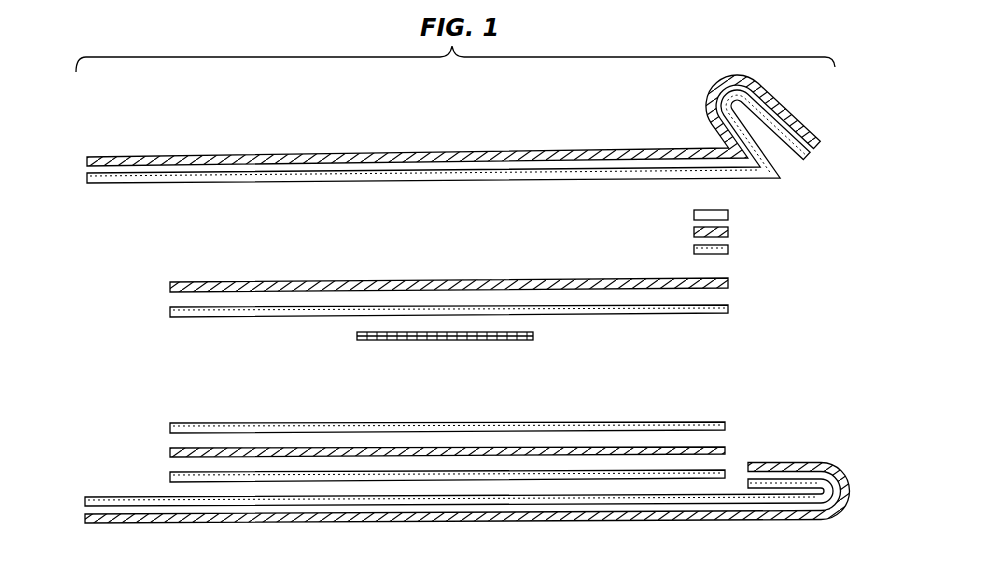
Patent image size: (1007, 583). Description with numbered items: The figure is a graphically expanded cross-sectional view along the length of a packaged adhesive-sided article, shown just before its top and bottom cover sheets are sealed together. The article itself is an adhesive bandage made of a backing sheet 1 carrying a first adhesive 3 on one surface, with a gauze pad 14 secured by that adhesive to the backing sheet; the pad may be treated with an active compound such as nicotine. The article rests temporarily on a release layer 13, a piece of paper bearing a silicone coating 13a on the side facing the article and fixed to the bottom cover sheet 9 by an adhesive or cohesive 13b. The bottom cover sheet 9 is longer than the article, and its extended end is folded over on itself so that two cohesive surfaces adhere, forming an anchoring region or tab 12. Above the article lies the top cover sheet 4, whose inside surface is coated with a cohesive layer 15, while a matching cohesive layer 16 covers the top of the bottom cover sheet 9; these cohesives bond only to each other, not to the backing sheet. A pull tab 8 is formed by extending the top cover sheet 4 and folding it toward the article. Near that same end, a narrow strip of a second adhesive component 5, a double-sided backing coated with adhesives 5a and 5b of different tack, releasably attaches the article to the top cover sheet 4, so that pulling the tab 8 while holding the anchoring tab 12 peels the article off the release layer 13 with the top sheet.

The backing sheet 1 is at (728, 283).
The first adhesive 3 is at (728, 309).
The top cover sheet 4 is at (87, 162).
The second adhesive component 5 is at (728, 232).
The adhesive material 5a is at (728, 215).
The adhesive material 5b is at (728, 250).
The pull tab 8 is at (790, 113).
The bottom cover sheet 9 is at (733, 517).
The anchoring region 12 is at (843, 485).
The release layer 13 is at (725, 450).
The silicone coating 13a is at (725, 426).
The adhesive or cohesive 13b is at (170, 477).
The gauze pad 14 is at (533, 336).
The cohesive layer 15 is at (87, 178).
The cohesive layer 16 is at (85, 500).